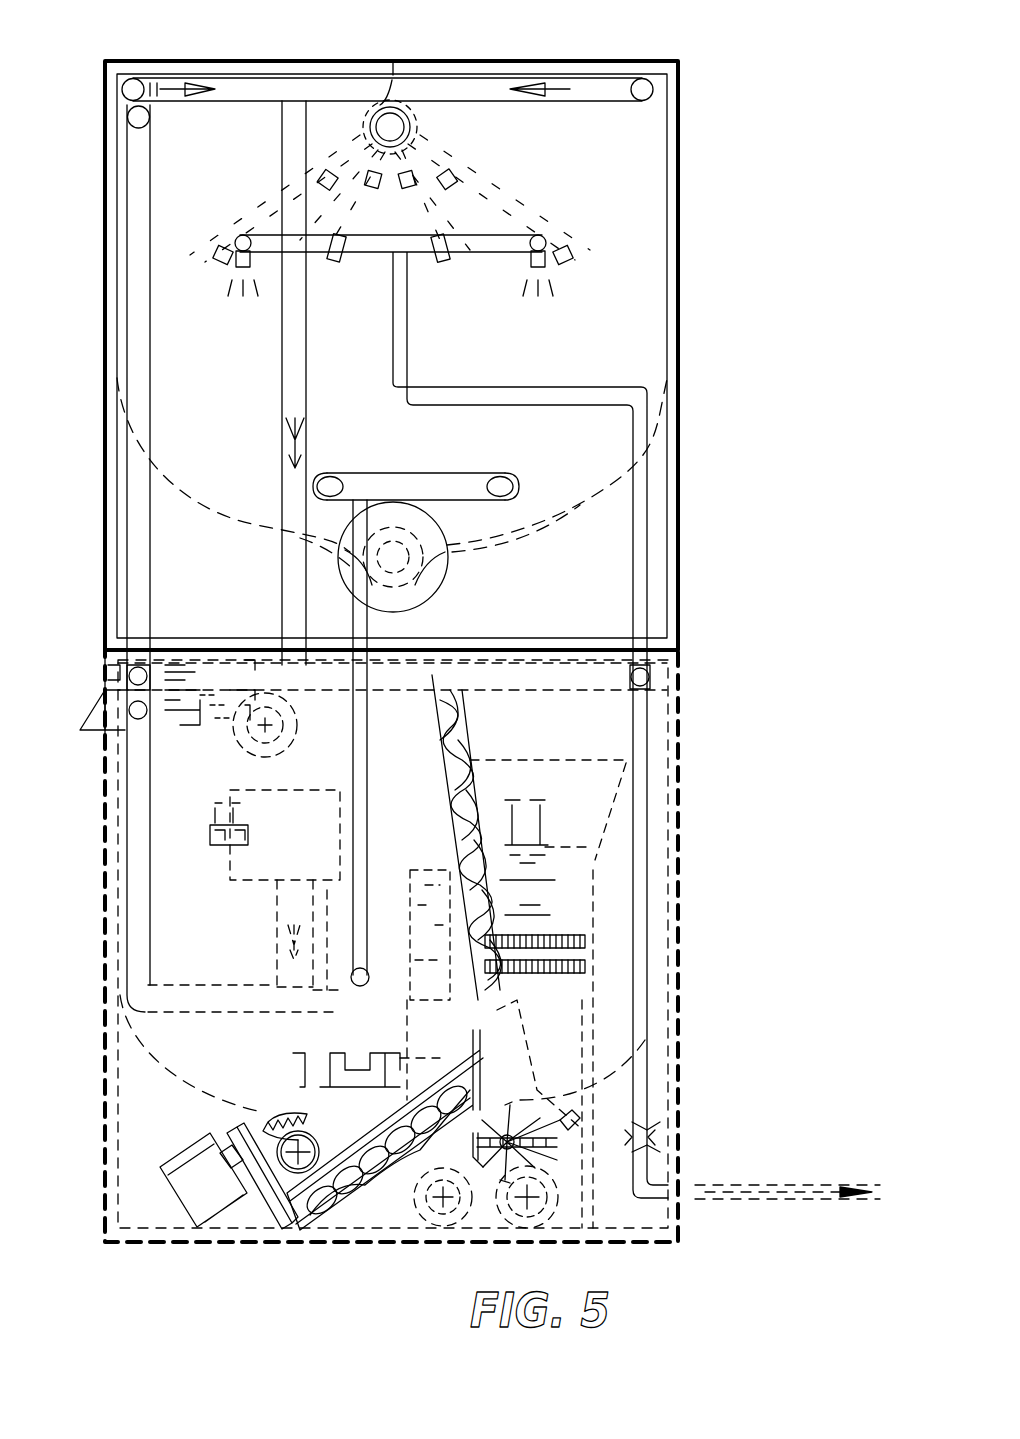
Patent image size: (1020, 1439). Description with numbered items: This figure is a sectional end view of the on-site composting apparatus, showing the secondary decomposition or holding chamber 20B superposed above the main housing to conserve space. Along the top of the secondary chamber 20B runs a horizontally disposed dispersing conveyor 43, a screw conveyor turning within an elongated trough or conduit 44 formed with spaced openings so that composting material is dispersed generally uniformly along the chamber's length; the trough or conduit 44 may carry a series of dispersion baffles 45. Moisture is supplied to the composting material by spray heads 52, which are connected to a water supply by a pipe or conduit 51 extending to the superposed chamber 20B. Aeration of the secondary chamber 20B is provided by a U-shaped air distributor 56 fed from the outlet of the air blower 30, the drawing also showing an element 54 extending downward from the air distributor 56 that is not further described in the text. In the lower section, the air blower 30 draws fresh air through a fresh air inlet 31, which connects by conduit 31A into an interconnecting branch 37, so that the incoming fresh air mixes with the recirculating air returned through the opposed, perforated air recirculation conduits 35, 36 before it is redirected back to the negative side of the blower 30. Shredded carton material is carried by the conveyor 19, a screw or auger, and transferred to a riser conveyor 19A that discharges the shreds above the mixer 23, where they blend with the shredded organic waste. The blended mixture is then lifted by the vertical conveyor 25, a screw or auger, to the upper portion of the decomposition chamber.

The secondary decomposition or holding chamber 20B is at (640, 200).
The dispersing conveyor 43 is at (392, 75).
The trough or conduit 44 is at (400, 118).
The dispersion baffles 45 is at (515, 212).
The spray heads 52 is at (536, 270).
The U-shaped air distributor 56 is at (402, 476).
The pipe or conduit 51 is at (640, 535).
The interconnecting branch 37 is at (640, 655).
The air recirculation conduit 36 is at (665, 672).
The air recirculation conduit 35 is at (115, 670).
The fresh air inlet 31 is at (95, 715).
The conduit 31A is at (227, 720).
The vertical conveyor 25 is at (488, 765).
The shaft 54 is at (368, 818).
The air blower 30 is at (298, 832).
The conveyor 19 is at (315, 1128).
The riser conveyor 19A is at (362, 1205).
The mixer 23 is at (580, 1133).